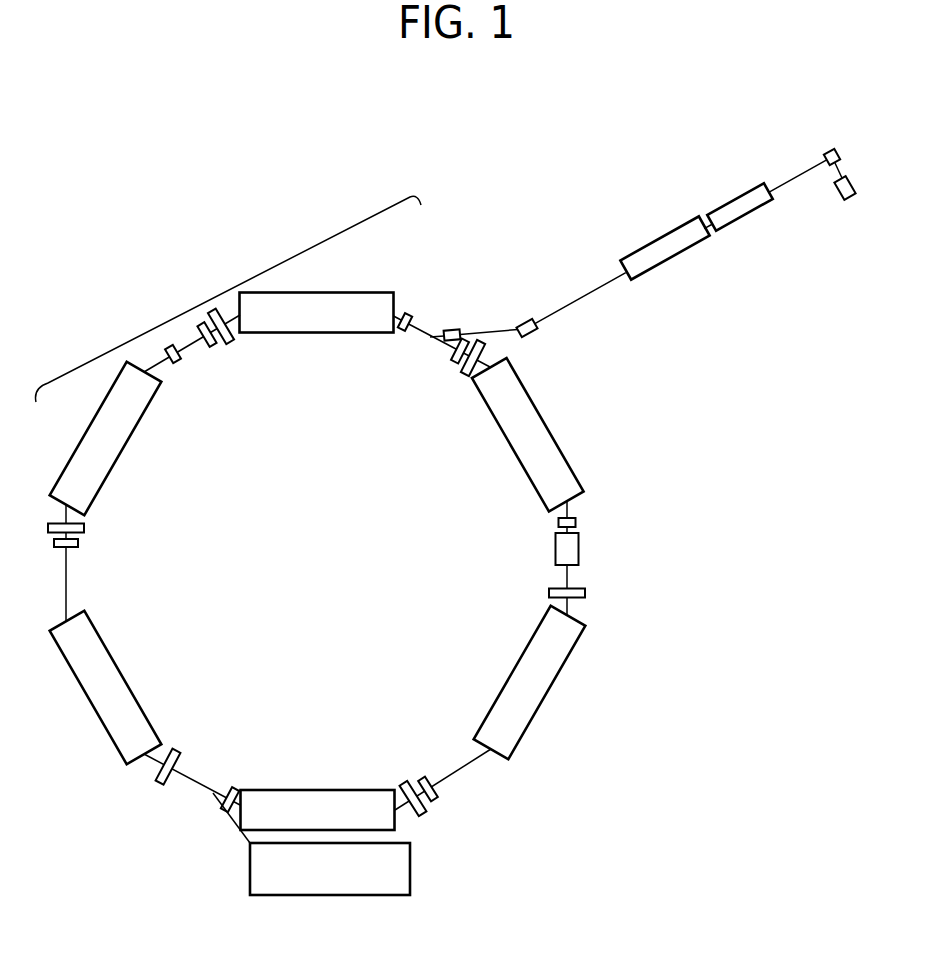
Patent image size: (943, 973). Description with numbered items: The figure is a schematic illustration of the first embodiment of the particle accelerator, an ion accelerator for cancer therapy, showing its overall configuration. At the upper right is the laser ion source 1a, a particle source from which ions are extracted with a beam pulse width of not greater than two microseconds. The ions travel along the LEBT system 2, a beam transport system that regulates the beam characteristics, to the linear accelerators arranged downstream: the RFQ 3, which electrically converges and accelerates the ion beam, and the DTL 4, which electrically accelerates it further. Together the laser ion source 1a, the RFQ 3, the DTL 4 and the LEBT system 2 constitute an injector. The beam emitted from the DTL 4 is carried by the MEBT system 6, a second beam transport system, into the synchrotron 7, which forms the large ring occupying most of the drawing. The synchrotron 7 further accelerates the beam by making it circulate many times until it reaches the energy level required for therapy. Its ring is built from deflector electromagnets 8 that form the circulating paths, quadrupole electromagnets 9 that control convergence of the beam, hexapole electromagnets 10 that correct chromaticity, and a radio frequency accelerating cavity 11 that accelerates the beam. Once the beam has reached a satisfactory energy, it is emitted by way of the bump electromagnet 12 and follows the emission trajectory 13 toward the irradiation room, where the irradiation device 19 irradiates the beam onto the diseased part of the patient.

The laser ion source 1a is at (850, 200).
The LEBT system 2 is at (836, 148).
The RFQ 3 is at (735, 196).
The DTL 4 is at (660, 240).
The MEBT system 6 is at (444, 312).
The synchrotron 7 is at (228, 291).
The deflector electromagnet 8 is at (317, 336).
The quadrupole electromagnet 9 is at (228, 334).
The hexapole electromagnet 10 is at (213, 343).
The radio frequency accelerating cavity 11 is at (553, 552).
The bump electromagnet 12 is at (178, 360).
The emission trajectory 13 is at (225, 828).
The irradiation device 19 is at (412, 868).